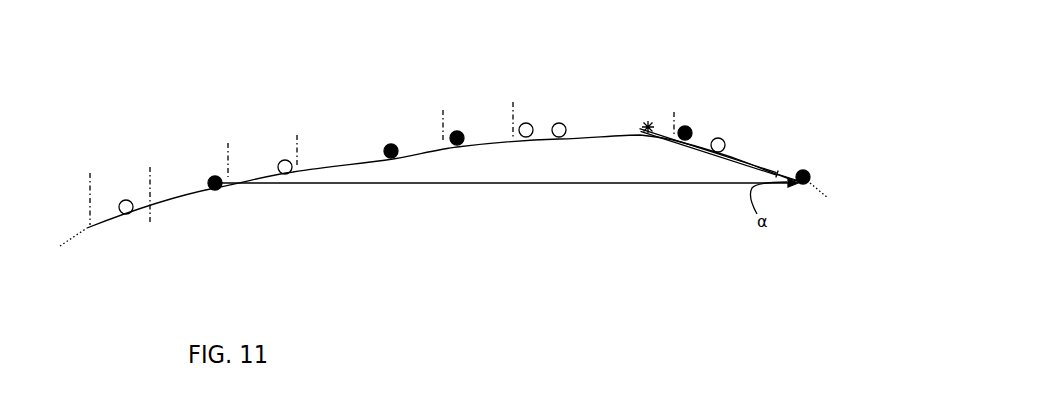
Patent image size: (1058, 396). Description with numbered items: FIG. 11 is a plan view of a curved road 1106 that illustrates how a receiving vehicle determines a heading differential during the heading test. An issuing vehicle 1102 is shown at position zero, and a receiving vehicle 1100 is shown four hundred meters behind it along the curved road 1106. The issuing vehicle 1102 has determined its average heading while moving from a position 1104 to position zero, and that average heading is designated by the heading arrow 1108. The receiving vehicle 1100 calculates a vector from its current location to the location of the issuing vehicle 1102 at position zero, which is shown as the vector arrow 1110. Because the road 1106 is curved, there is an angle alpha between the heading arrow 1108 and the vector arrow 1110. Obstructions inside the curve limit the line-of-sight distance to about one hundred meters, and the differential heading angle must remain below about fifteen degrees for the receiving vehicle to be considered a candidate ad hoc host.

The receiving vehicle 1100 is at (215, 176).
The issuing vehicle 1102 is at (812, 174).
The position 1104 is at (640, 132).
The curved road 1106 is at (357, 162).
The heading arrow 1108 is at (738, 158).
The vector arrow 1110 is at (487, 185).